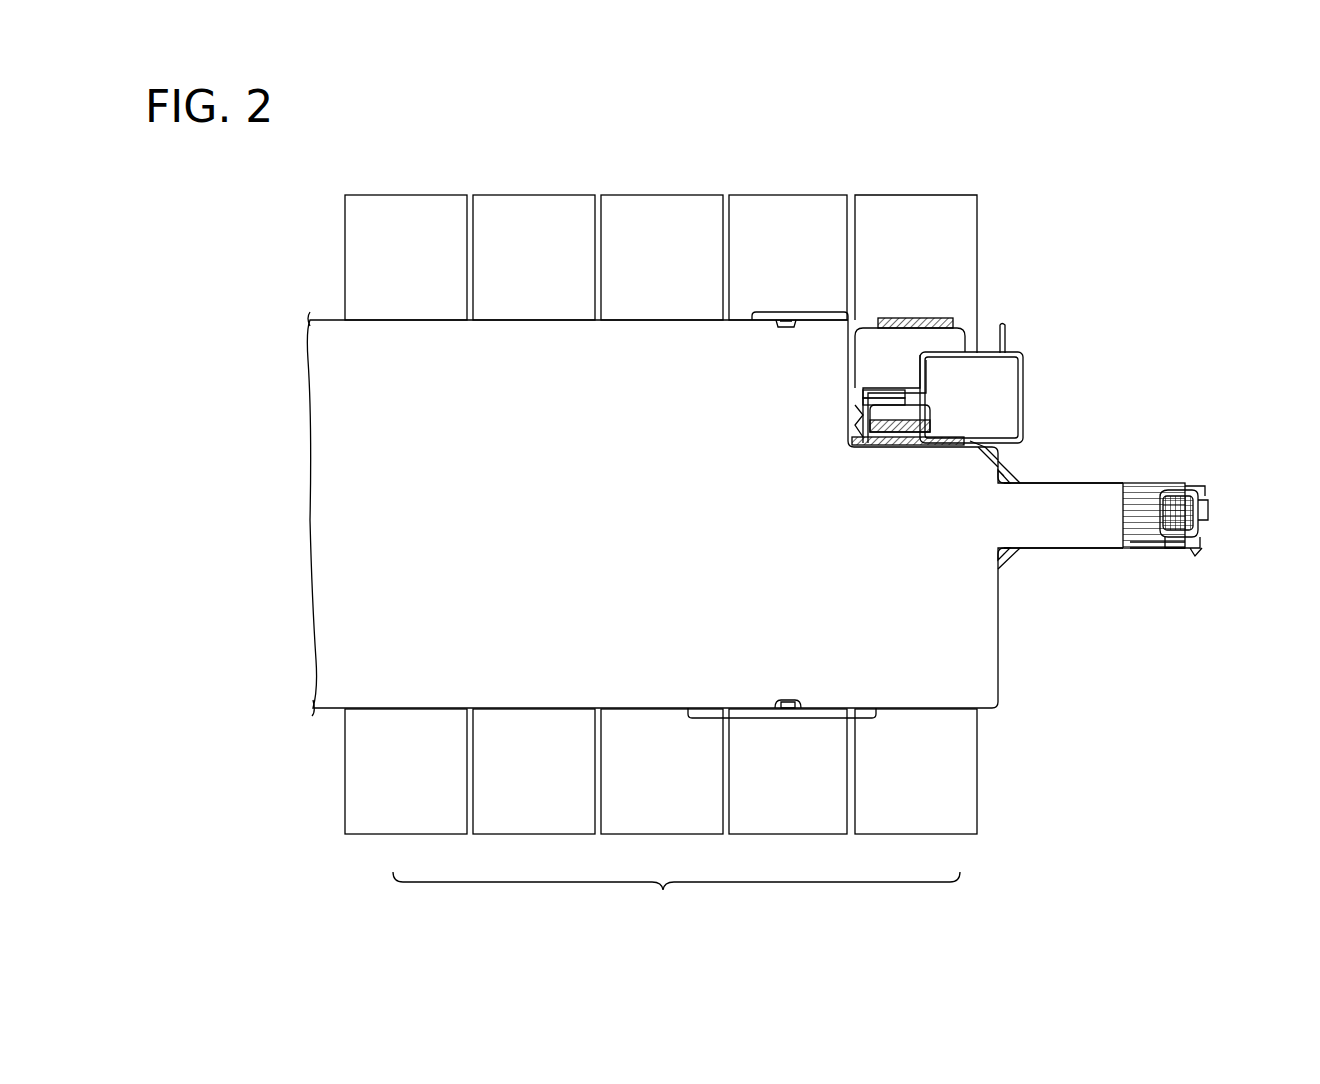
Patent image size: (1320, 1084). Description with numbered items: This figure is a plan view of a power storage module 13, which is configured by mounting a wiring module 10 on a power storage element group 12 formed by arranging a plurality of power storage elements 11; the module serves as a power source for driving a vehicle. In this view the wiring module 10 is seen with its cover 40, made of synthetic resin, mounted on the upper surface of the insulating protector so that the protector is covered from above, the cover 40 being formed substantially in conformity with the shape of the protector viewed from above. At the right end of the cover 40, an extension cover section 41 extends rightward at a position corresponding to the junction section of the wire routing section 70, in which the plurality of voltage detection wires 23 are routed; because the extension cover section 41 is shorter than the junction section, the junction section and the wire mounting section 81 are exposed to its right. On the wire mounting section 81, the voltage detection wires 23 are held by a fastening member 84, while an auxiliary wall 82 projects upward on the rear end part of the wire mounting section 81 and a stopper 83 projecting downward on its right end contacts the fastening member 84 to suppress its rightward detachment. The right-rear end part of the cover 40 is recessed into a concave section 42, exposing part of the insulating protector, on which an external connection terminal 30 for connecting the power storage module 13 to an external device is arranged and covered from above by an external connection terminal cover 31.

The wiring module 10 is at (990, 300).
The power storage element 11 is at (408, 834).
The power storage element group 12 is at (676, 895).
The power storage module 13 is at (704, 538).
The voltage detection wire 23 is at (1138, 495).
The external connection terminal 30 is at (1004, 333).
The external connection terminal cover 31 is at (1013, 388).
The cover 40 is at (327, 387).
The extension cover section 41 is at (1078, 497).
The concave section 42 is at (852, 366).
The wire routing section 70 is at (1142, 550).
The wire mounting section 81 is at (1200, 518).
The auxiliary wall 82 is at (1182, 485).
The stopper 83 is at (1200, 510).
The fastening member 84 is at (1183, 545).